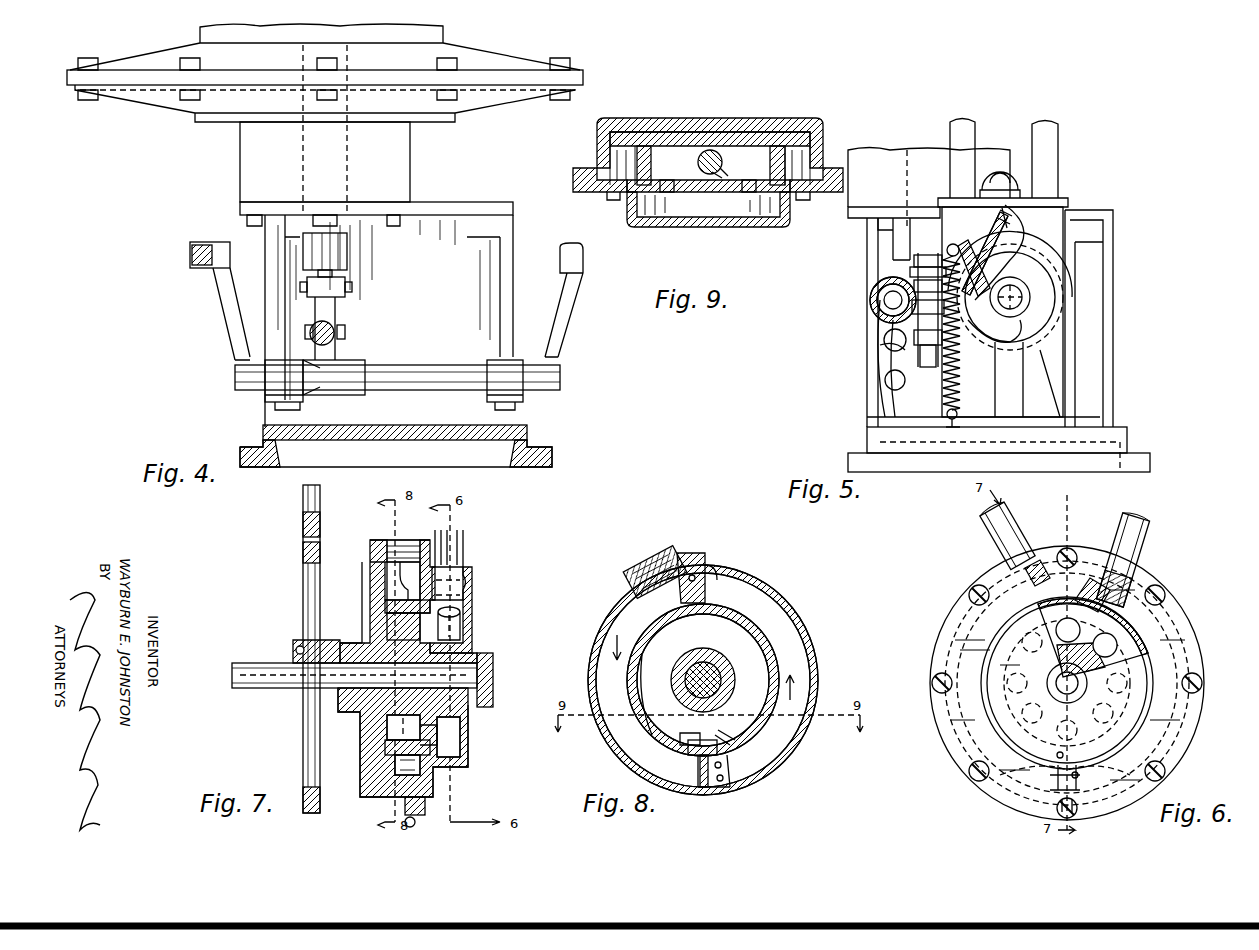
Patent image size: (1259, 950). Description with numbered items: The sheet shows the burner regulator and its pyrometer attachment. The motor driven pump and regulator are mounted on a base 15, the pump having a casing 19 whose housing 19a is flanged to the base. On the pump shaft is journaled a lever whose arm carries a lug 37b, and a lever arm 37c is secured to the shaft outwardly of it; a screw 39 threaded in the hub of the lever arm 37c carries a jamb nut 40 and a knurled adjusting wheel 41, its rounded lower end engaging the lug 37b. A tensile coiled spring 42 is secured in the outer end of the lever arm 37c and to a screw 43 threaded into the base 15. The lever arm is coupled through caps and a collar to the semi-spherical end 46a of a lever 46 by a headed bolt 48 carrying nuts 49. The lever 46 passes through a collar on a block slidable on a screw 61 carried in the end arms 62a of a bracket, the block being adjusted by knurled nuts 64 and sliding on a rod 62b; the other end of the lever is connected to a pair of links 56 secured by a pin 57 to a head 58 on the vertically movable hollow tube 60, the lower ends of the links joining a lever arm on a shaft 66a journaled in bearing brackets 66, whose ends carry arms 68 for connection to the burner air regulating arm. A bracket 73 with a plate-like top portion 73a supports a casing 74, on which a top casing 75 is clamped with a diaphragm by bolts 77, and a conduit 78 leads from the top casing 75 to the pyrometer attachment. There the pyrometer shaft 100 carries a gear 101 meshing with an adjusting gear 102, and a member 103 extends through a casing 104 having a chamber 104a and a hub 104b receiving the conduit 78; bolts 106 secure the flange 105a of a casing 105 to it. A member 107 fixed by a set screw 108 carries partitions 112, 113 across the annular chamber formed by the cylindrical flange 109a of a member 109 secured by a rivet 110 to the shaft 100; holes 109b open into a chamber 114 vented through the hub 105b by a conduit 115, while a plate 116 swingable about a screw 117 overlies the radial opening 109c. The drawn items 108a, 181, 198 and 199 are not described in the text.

In FIG. 4, the base 15 is at (483, 458).
In FIG. 5, the base 15 is at (1135, 456).
In FIG. 5, the casing 19 is at (1030, 370).
In FIG. 5, the housing 19a is at (1048, 330).
In FIG. 5, the lug 37b is at (994, 331).
In FIG. 5, the lever arm 37c is at (1015, 245).
In FIG. 5, the screw 39 is at (995, 232).
In FIG. 5, the jamb nut 40 is at (985, 242).
In FIG. 5, the knurled adjusting wheel 41 is at (1010, 218).
In FIG. 5, the tensile coiled spring 42 is at (958, 393).
In FIG. 5, the screw 43 is at (957, 430).
In FIG. 4, the lever 46 is at (337, 323).
In FIG. 5, the semi-spherical end 46a is at (880, 345).
In FIG. 5, the headed bolt 48 is at (925, 302).
In FIG. 5, the nuts 49 is at (910, 267).
In FIG. 4, the links 56 is at (322, 315).
In FIG. 4, the pin 57 is at (348, 290).
In FIG. 4, the head 58 is at (333, 272).
In FIG. 4, the hollow shaft or tube 60 is at (325, 248).
In FIG. 5, the screw 61 is at (890, 328).
In FIG. 5, the end arms 62a is at (885, 370).
In FIG. 5, the rod 62b is at (893, 385).
In FIG. 5, the nuts 64 is at (890, 302).
In FIG. 4, the bearing brackets 66 is at (397, 370).
In FIG. 4, the shaft 66a is at (270, 402).
In FIG. 4, the arms 68 is at (215, 243).
In FIG. 4, the bracket 73 is at (493, 230).
In FIG. 4, the top portion 73a is at (248, 208).
In FIG. 5, the top portion 73a is at (850, 216).
In FIG. 4, the casing 74 is at (410, 158).
In FIG. 5, the casing 74 is at (893, 150).
In FIG. 4, the top casing 75 is at (473, 58).
In FIG. 4, the bolts 77 is at (560, 63).
In FIG. 6, the conduit 78 is at (1020, 510).
In FIG. 7, the shaft 100 is at (246, 658).
In FIG. 8, the shaft 100 is at (720, 660).
In FIG. 7, the gear 101 is at (303, 552).
In FIG. 7, the gear 102 is at (303, 522).
In FIG. 7, the member 103 is at (320, 648).
In FIG. 9, the casing 104 is at (700, 118).
In FIG. 7, the casing 104 is at (368, 555).
In FIG. 7, the chamber 104a is at (390, 725).
In FIG. 8, the hub 104b is at (690, 550).
In FIG. 9, the casing 105 is at (632, 217).
In FIG. 7, the casing 105 is at (476, 580).
In FIG. 6, the casing 105 is at (975, 623).
In FIG. 9, the flange 105a is at (573, 175).
In FIG. 7, the flange 105a is at (430, 822).
In FIG. 7, the hub 105b is at (474, 568).
In FIG. 6, the hub 105b is at (1130, 585).
In FIG. 7, the bolts 106 is at (427, 797).
In FIG. 6, the bolts 106 is at (1193, 693).
In FIG. 7, the member 107 is at (386, 590).
In FIG. 7, the set screw 108 is at (470, 610).
In FIG. 6, the set screw 108 is at (1140, 657).
In FIG. 7, the threaded bore 108a is at (387, 580).
In FIG. 8, the member 109 is at (680, 665).
In FIG. 9, the cylindrical flange 109a is at (823, 147).
In FIG. 8, the cylindrical flange 109a is at (703, 680).
In FIG. 9, the holes 109b is at (707, 205).
In FIG. 7, the holes 109b is at (460, 627).
In FIG. 6, the holes 109b is at (1115, 640).
In FIG. 9, the opening 109c is at (705, 177).
In FIG. 8, the opening 109c is at (695, 752).
In FIG. 6, the opening 109c is at (1040, 765).
In FIG. 7, the rivet or bolt 110 is at (495, 656).
In FIG. 8, the block or partition 112 is at (720, 567).
In FIG. 8, the block or partition 113 is at (690, 788).
In FIG. 6, the block or partition 113 is at (1060, 785).
In FIG. 7, the chamber 114 is at (452, 735).
In FIG. 7, the conduit 115 is at (452, 530).
In FIG. 6, the conduit 115 is at (1150, 536).
In FIG. 9, the plate 116 is at (723, 161).
In FIG. 8, the plate 116 is at (690, 733).
In FIG. 9, the screw 117 is at (726, 174).
In FIG. 8, the screw 117 is at (725, 735).
In FIG. 8, the ring 181 is at (640, 618).
In FIG. 5, the post 198 is at (1058, 134).
In FIG. 5, the post 199 is at (975, 126).